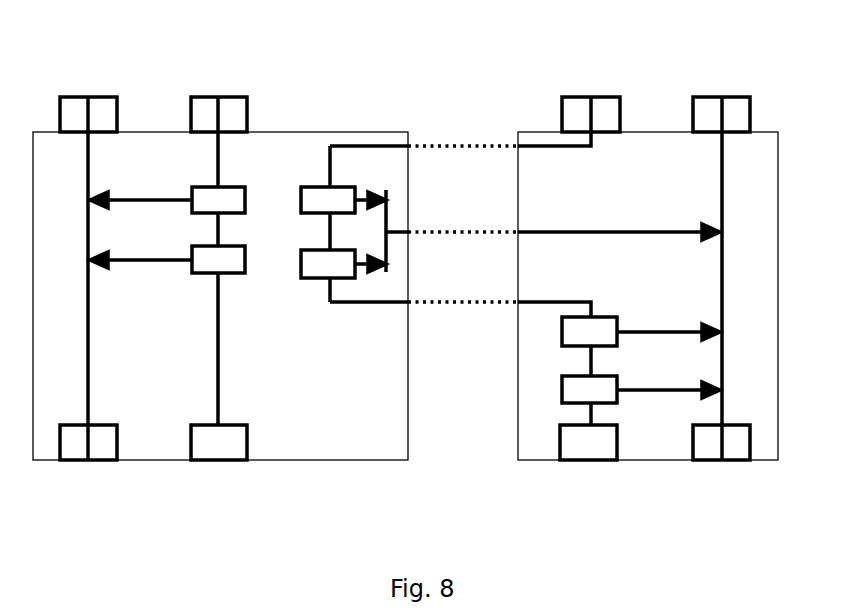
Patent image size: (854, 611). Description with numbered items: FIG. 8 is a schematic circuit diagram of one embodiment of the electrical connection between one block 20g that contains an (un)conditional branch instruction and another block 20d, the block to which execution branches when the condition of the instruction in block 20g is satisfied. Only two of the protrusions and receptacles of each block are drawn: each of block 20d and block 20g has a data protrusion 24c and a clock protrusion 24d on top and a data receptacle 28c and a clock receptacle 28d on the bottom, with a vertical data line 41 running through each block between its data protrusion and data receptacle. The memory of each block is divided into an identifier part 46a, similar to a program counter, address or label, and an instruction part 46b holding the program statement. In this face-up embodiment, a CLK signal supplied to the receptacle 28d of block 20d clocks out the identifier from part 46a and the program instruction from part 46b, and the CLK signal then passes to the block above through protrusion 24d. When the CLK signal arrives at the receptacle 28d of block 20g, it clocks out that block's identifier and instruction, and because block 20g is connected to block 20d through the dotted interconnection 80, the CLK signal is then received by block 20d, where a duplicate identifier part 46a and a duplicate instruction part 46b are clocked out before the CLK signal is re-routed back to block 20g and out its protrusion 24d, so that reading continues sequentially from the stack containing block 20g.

The block 20d is at (338, 406).
The block 20g is at (653, 188).
The protrusion 24c is at (406, 82).
The protrusion 24d is at (405, 82).
The receptacle 28c is at (405, 478).
The receptacle 28d is at (404, 478).
The data line 41 is at (87, 337).
The identifier part 46a is at (317, 263).
The instruction part 46b is at (317, 198).
The interconnect between chips 80 is at (463, 224).